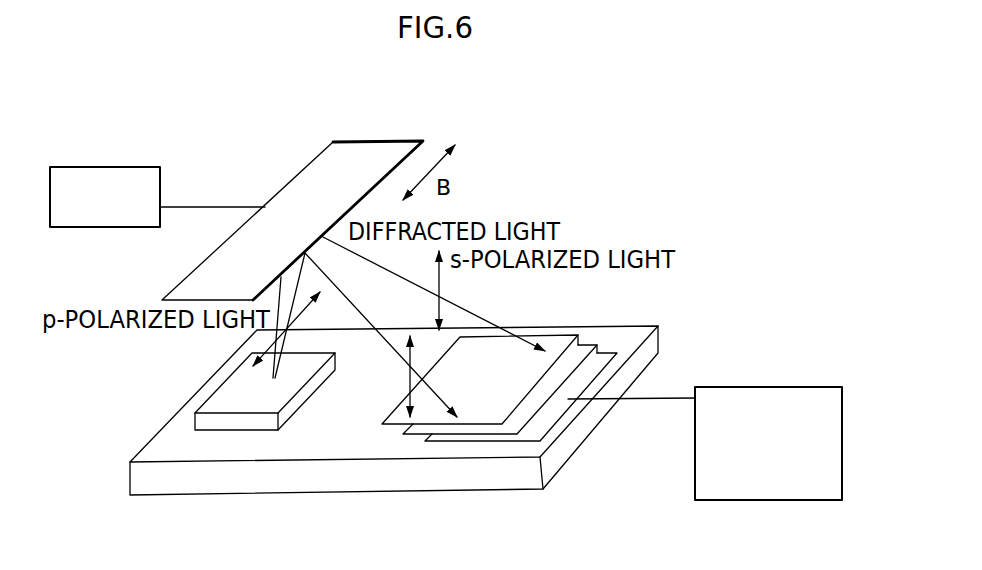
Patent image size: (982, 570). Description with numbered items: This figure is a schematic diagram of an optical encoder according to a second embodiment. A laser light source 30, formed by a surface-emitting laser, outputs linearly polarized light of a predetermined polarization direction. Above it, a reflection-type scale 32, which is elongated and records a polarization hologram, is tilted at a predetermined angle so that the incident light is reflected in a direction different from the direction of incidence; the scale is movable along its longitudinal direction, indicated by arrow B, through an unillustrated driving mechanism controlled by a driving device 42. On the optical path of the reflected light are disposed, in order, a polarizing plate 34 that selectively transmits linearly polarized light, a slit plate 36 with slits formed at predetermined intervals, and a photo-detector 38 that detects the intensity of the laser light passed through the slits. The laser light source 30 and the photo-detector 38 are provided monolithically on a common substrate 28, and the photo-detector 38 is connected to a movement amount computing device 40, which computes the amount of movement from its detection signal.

The common substrate 28 is at (180, 487).
The laser light source 30 is at (230, 403).
The reflection-type scale 32 is at (347, 150).
The polarizing plate 34 is at (563, 336).
The slit plate 36 is at (590, 343).
The photo-detector 38 is at (612, 347).
The movement amount computing device 40 is at (783, 387).
The driving device 42 is at (110, 167).